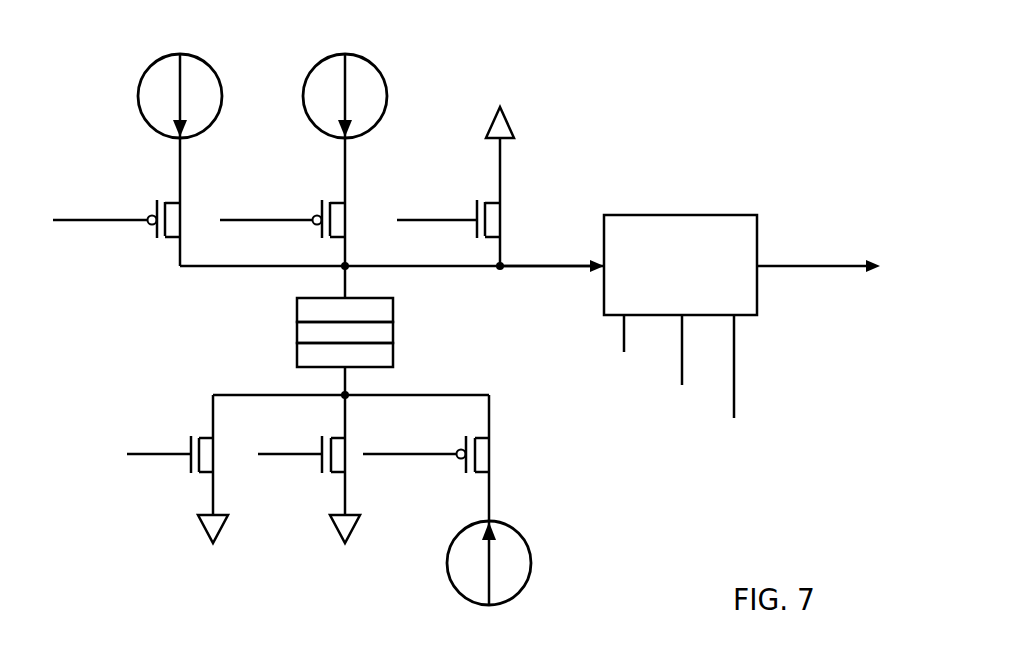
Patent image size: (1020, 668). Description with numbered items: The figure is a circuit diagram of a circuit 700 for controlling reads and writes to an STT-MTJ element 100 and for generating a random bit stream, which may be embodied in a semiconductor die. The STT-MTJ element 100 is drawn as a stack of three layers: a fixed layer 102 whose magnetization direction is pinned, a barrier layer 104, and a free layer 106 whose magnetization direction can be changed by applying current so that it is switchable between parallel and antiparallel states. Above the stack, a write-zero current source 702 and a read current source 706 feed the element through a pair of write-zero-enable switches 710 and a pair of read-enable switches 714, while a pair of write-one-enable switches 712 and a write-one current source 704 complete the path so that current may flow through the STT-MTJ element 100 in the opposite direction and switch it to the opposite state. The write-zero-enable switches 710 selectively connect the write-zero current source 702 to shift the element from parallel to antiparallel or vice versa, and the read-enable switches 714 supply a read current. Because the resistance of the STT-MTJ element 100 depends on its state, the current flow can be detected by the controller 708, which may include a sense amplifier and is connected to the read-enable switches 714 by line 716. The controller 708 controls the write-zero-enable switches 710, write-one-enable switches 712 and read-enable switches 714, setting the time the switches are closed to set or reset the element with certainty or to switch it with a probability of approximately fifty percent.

The circuit 700 is at (466, 320).
The write-0 current source 702 is at (203, 63).
The write-1 current source 704 is at (522, 564).
The read current source 706 is at (369, 63).
The controller 708 is at (690, 214).
The write-0-enable switches 710 is at (159, 305).
The write-1-enable switches 712 is at (448, 330).
The read-enable switches 714 is at (294, 328).
The line 716 is at (537, 263).
The STT-MTJ element 100 is at (425, 326).
The fixed layer 102 is at (297, 355).
The barrier layer 104 is at (297, 331).
The free layer 106 is at (297, 308).